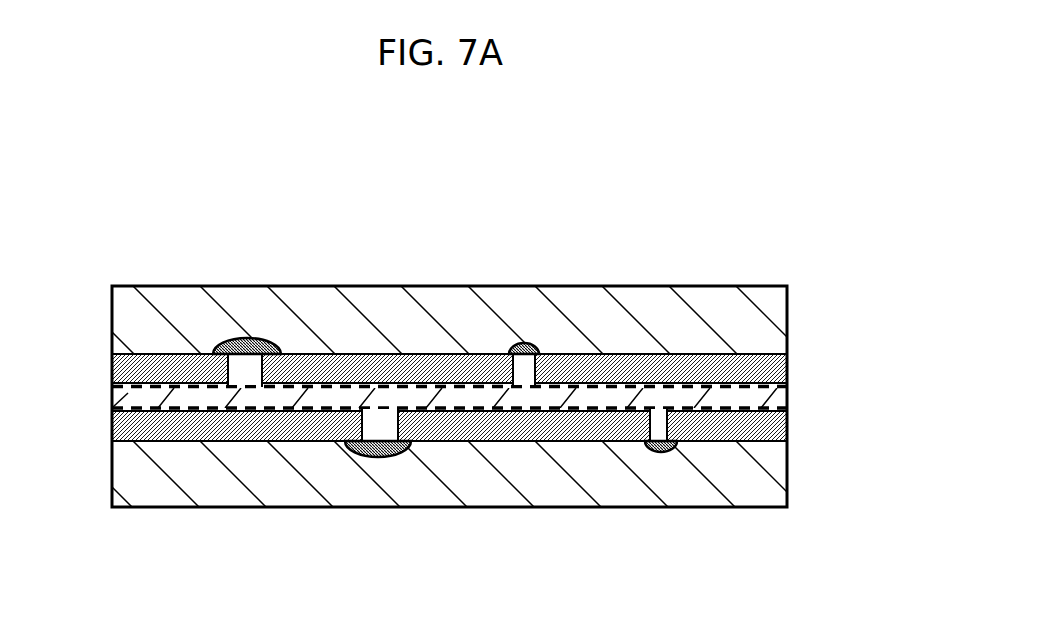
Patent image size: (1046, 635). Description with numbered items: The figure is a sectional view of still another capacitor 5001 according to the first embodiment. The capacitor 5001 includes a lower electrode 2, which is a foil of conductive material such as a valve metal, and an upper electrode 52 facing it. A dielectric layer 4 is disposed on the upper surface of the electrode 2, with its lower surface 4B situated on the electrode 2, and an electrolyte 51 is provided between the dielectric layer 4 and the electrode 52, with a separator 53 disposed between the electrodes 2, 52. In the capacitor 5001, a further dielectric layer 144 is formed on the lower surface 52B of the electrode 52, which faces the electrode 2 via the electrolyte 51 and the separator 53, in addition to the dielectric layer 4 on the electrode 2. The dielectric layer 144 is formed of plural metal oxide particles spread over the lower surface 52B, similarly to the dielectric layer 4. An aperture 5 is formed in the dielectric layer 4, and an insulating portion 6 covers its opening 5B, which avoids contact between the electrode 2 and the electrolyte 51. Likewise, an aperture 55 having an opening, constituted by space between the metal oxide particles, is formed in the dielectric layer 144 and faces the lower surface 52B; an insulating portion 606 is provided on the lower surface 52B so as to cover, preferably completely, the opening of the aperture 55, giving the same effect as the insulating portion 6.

The capacitor 5001 is at (735, 230).
The electrode 52 is at (753, 297).
The electrode 2 is at (747, 480).
The dielectric layer 144 is at (777, 365).
The lower surface 52B is at (153, 355).
The dielectric layer 4 is at (777, 428).
The lower surface 4B is at (219, 443).
The separator 53 is at (777, 389).
The electrolyte 51 is at (128, 394).
The aperture 55 is at (237, 370).
The insulating portion 606 is at (247, 338).
The aperture 5 is at (384, 426).
The insulating portion 6 is at (378, 458).
The opening 5B is at (360, 453).